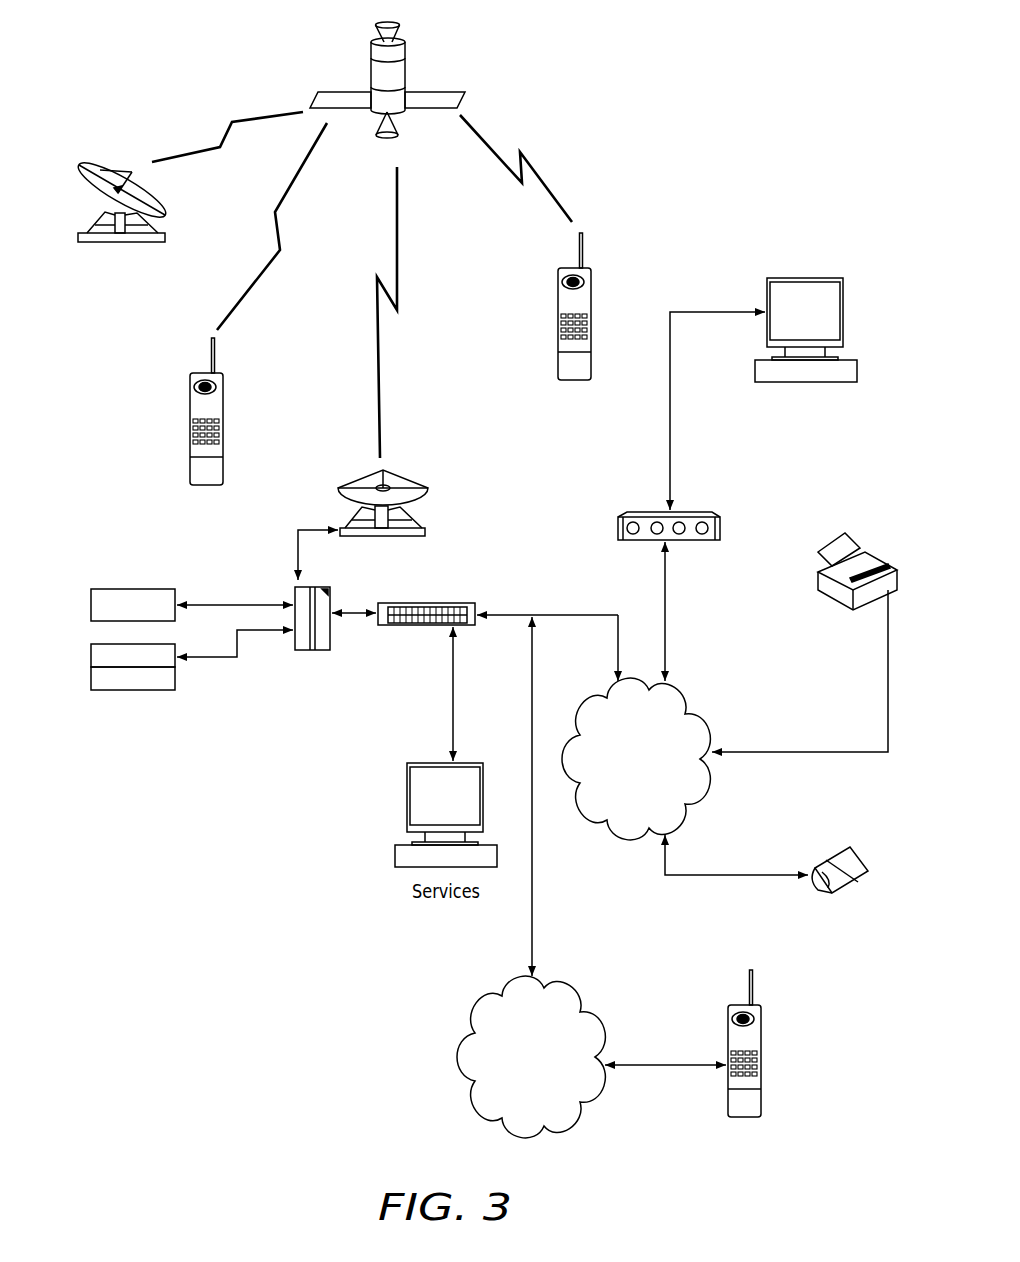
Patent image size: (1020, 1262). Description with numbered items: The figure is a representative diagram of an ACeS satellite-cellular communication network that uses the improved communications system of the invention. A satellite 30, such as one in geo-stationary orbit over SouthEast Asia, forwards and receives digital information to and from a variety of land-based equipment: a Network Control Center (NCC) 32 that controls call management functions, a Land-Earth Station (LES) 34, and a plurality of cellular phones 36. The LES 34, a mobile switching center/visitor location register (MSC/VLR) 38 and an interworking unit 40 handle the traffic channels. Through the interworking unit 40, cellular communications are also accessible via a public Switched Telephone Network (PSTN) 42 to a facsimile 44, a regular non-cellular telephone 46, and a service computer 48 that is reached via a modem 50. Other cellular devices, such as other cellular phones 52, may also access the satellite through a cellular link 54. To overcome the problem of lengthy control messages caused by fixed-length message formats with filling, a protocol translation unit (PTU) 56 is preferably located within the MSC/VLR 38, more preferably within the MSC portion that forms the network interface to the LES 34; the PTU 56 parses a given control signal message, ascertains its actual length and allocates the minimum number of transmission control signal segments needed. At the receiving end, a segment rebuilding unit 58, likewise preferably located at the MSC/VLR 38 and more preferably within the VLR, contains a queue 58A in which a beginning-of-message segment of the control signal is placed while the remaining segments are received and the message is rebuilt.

The satellite 30 is at (370, 68).
The Network Control Center (NCC) 32 is at (93, 195).
The Land-Earth Station (LES) 34 is at (425, 487).
The cellular phone 36 is at (222, 400).
The mobile switching center/visitor location register (MSC/VLR) 38 is at (330, 597).
The interworking unit 40 is at (448, 603).
The public Switched Telephone Network (PSTN) 42 is at (636, 759).
The facsimile 44 is at (870, 552).
The regular non-cellular telephone 46 is at (850, 853).
The service computer 48 is at (813, 278).
The modem 50 is at (712, 512).
The cellular phone 52 is at (763, 1032).
The cellular link 54 is at (531, 1057).
The protocol translation unit (PTU) 56 is at (135, 589).
The segment rebuilding unit 58 is at (91, 657).
The queue 58A is at (132, 690).